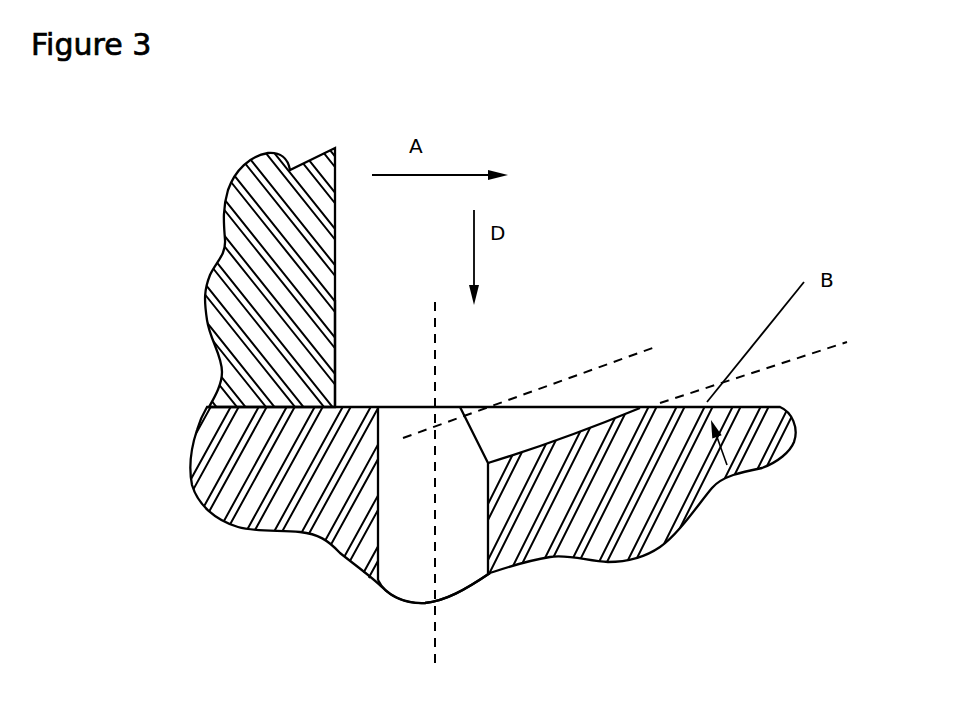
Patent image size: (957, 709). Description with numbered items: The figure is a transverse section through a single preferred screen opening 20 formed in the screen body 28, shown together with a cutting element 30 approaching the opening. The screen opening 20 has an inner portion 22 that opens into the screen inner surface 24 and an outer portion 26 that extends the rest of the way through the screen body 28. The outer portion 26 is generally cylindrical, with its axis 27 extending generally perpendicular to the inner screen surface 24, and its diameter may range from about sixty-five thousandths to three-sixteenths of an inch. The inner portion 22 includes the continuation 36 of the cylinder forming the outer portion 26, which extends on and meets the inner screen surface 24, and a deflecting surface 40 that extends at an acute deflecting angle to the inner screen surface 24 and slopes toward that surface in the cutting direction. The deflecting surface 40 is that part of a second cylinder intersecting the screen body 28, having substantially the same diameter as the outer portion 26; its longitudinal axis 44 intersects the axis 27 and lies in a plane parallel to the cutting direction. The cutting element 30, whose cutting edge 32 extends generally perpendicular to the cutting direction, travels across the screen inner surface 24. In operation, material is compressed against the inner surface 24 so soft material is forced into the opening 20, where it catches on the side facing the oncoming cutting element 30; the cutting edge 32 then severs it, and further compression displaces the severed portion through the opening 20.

The screen opening 20 is at (524, 313).
The inner portion 22 is at (398, 364).
The screen inner surface 24 is at (767, 406).
The outer portion 26 is at (378, 617).
The axis 27 is at (435, 618).
The screen body 28 is at (715, 488).
The cutting element 30 is at (313, 180).
The cutting edge 32 is at (336, 405).
The continuation 36 is at (386, 524).
The deflecting surface 40 is at (691, 368).
The longitudinal axis 44 is at (614, 362).